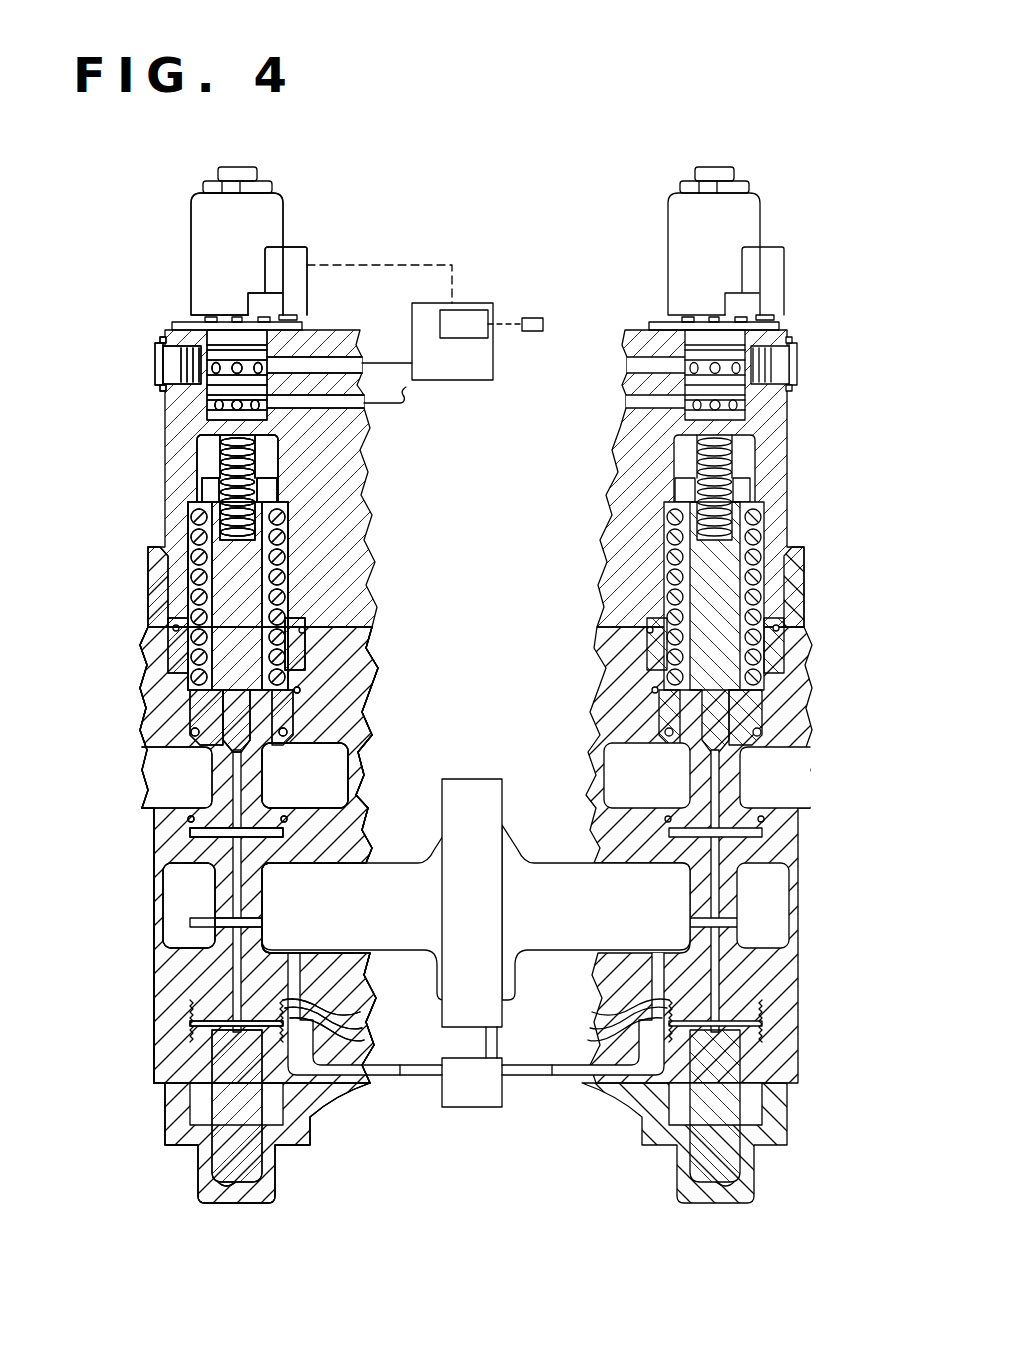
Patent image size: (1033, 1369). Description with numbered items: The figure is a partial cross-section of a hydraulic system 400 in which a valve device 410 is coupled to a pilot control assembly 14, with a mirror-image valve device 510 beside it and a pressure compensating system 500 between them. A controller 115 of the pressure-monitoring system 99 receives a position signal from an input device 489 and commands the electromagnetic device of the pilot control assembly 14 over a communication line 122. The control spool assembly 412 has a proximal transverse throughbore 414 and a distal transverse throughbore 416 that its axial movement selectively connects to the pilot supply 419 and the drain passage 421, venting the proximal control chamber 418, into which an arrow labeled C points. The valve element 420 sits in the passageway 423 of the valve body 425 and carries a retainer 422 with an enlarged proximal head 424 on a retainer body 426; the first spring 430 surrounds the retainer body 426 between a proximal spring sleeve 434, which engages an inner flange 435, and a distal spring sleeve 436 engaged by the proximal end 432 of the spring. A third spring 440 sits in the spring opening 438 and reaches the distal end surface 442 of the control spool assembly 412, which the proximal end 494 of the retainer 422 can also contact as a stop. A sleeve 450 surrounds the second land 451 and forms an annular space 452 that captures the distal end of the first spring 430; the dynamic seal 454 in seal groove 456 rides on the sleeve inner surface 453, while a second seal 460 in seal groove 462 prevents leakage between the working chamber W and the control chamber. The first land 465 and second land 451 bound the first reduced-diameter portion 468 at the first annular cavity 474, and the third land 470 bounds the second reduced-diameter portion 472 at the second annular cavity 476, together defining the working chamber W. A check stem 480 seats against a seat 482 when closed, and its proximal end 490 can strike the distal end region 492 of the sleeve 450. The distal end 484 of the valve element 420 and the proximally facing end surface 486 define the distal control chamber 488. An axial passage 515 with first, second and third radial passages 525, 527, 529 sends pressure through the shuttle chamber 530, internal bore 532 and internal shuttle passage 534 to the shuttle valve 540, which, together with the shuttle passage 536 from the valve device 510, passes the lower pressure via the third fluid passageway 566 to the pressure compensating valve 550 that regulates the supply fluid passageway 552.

The pilot control assembly 14 is at (197, 217).
The hydraulic system 400 is at (446, 669).
The valve device 410 is at (352, 187).
The valve device 510 is at (782, 512).
The communication line 122 is at (362, 265).
The control spool assembly 412 is at (218, 345).
The proximal transverse throughbore 414 is at (185, 366).
The distal transverse throughbore 416 is at (208, 400).
The pilot supply 419 is at (382, 363).
The drain passage 421 is at (402, 420).
The pressure-monitoring system 99 is at (452, 341).
The controller 115 is at (464, 324).
The input device 489 is at (534, 318).
The distal end surface 442 is at (222, 441).
The control pressure C is at (212, 453).
The proximal control chamber 418 is at (205, 469).
The proximal end of the retainer 494 is at (200, 489).
The spring opening 438 is at (193, 506).
The third spring 440 is at (282, 455).
The enlarged proximal head 424 is at (277, 486).
The inner flange 435 is at (288, 506).
The proximal spring sleeve 434 is at (193, 542).
The valve body 425 is at (153, 574).
The annular space 452 is at (190, 600).
The retainer 422 is at (247, 568).
The retainer body 426 is at (350, 600).
The passageway 423 is at (172, 641).
The first spring 430 is at (187, 665).
The distal spring sleeve 436 is at (225, 693).
The sleeve 450 is at (296, 646).
The proximal end of the first spring 432 is at (290, 678).
The second seal 460 is at (301, 691).
The second land 451 is at (293, 710).
The sleeve inner surface 453 is at (287, 733).
The seal groove 456 is at (338, 743).
The first reduced-diameter portion 468 is at (272, 772).
The second annular cavity 476 is at (305, 775).
The seat 482 is at (288, 819).
The first annular cavity 474 is at (322, 860).
The supply fluid passageway 552 is at (476, 912).
The second radial passage 527 is at (262, 923).
The seal groove 462 is at (190, 712).
The dynamic seal 454 is at (192, 732).
The distal end region of the sleeve 492 is at (150, 749).
The proximal end of the check stem 490 is at (148, 806).
The check stem 480 is at (188, 819).
The third radial passage 529 is at (188, 835).
The first land 465 is at (197, 853).
The second reduced-diameter portion 472 is at (215, 892).
The working chamber W is at (183, 920).
The valve element 420 is at (200, 955).
The axial passage 515 is at (197, 1002).
The third land 470 is at (213, 1042).
The distal end of the valve element 484 is at (213, 1170).
The distal control chamber 488 is at (226, 1190).
The proximally facing end surface 486 is at (255, 1189).
The first radial passage 525 is at (284, 1000).
The shuttle chamber 530 is at (320, 1025).
The internal bore 532 is at (330, 1040).
The internal shuttle passage 534 is at (398, 1072).
The shuttle passage 536 is at (525, 1072).
The third fluid passageway 566 is at (500, 1040).
The pressure compensating system 500 is at (503, 943).
The pressure compensating valve 550 is at (472, 903).
The shuttle valve 540 is at (472, 1082).